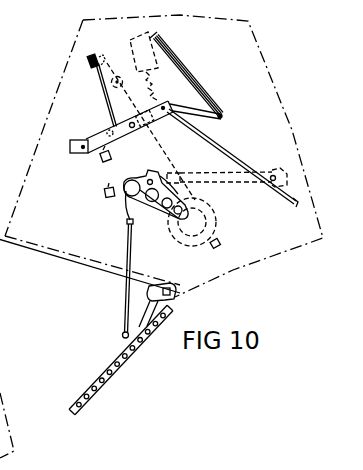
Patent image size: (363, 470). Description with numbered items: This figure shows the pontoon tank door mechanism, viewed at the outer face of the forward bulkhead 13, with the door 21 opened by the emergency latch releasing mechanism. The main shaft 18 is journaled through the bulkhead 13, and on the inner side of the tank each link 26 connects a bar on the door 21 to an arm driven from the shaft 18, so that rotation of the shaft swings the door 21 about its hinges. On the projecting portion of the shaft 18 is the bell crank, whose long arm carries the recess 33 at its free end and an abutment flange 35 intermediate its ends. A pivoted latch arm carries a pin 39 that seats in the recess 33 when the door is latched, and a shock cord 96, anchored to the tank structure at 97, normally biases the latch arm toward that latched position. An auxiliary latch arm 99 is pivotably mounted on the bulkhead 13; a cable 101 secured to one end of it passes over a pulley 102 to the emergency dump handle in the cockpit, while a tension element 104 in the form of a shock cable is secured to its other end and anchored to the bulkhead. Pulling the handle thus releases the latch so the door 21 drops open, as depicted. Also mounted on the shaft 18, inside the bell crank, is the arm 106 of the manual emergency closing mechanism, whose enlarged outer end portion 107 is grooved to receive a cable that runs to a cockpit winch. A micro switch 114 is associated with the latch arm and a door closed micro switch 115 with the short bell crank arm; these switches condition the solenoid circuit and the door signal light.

The forward bulkhead 13 is at (45, 124).
The main shaft 18 is at (125, 197).
The door 21 is at (107, 375).
The link 26 is at (125, 312).
The recess 33 is at (182, 205).
The abutment flange 35 is at (172, 187).
The pin 39 is at (133, 122).
The shock cord 96 is at (230, 157).
The shock cord anchorage 97 is at (295, 204).
The auxiliary latch arm 99 is at (138, 132).
The cable 101 is at (104, 97).
The pulley 102 is at (88, 58).
The tension element 104 is at (190, 91).
The arm 106 is at (172, 220).
The enlarged outer end portion 107 is at (213, 243).
The micro switch 114 is at (101, 157).
The door closed micro switch 115 is at (104, 192).